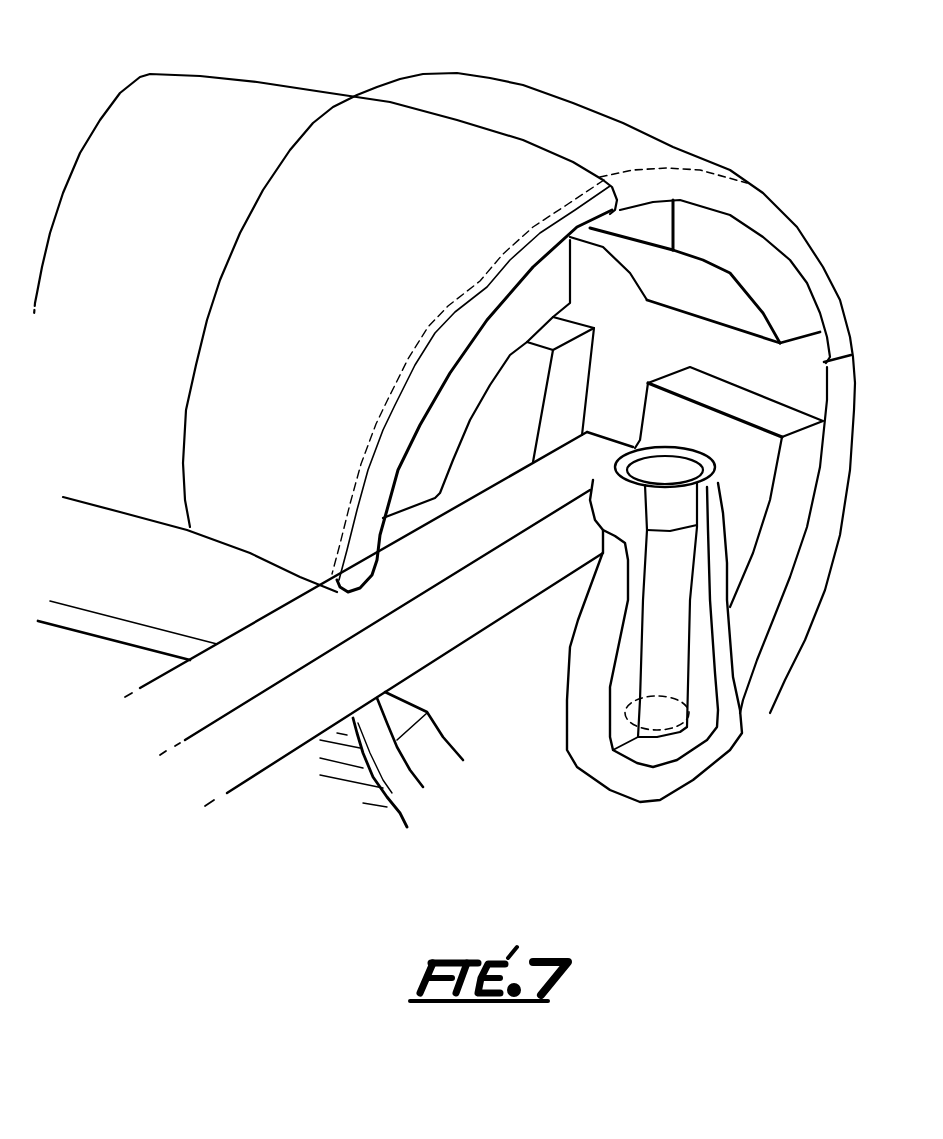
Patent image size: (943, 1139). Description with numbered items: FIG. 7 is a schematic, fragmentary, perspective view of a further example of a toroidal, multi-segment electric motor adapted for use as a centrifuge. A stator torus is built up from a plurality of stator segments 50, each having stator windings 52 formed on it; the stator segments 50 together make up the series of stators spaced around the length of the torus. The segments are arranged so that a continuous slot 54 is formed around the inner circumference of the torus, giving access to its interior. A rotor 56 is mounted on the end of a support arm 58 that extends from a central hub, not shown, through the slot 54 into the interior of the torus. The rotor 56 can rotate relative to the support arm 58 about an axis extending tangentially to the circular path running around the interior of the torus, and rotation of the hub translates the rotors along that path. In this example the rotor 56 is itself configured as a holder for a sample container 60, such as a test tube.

The stator segments 50 is at (353, 123).
The stator windings 52 is at (520, 307).
The continuous slot 54 is at (160, 598).
The rotor 56 is at (640, 785).
The support arm 58 is at (240, 753).
The sample container 60 is at (670, 672).